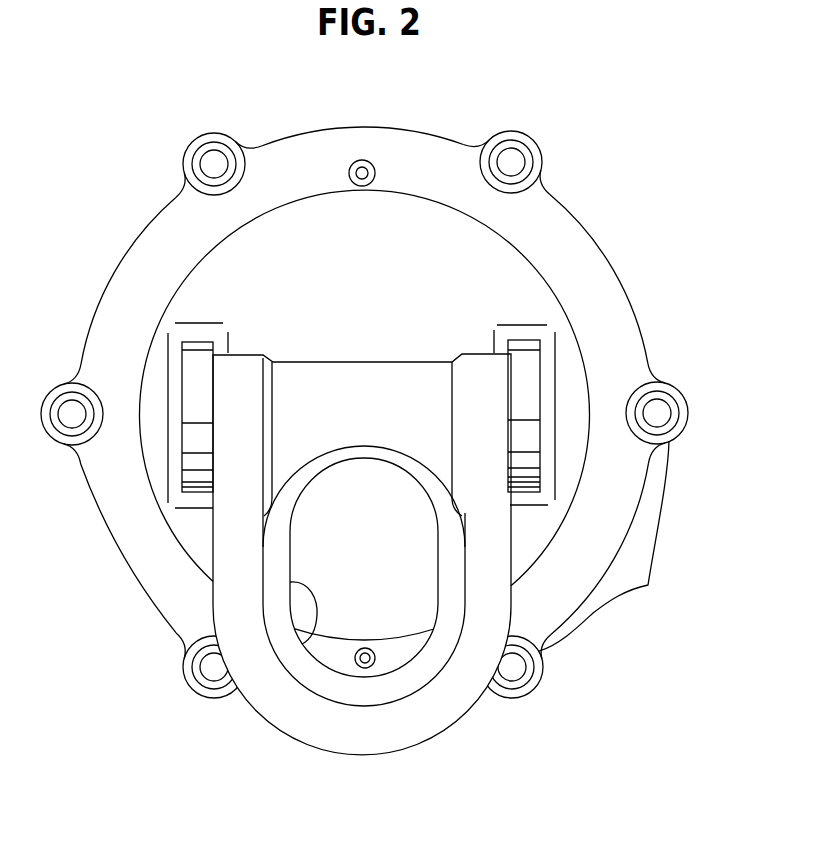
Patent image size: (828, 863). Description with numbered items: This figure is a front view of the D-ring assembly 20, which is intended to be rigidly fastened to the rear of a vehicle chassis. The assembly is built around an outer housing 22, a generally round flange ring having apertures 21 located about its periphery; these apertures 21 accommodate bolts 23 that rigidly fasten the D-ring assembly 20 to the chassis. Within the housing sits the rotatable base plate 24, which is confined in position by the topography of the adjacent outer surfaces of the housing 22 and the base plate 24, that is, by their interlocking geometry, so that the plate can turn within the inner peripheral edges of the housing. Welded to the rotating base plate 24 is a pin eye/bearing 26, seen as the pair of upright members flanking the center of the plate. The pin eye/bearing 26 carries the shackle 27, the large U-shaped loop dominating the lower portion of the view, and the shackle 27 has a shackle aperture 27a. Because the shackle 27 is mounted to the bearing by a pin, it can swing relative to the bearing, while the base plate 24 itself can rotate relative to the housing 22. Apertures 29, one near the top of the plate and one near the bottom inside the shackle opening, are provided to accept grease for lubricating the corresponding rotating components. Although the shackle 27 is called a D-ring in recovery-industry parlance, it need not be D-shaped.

The D-ring assembly 20 is at (641, 203).
The apertures 21 is at (663, 428).
The outer housing 22 is at (598, 298).
The bolts 23 is at (648, 586).
The rotatable base plate 24 is at (364, 415).
The pin eye/bearing 26 is at (200, 337).
The shackle 27 is at (365, 728).
The shackle aperture 27a is at (310, 644).
The apertures 29 is at (363, 165).